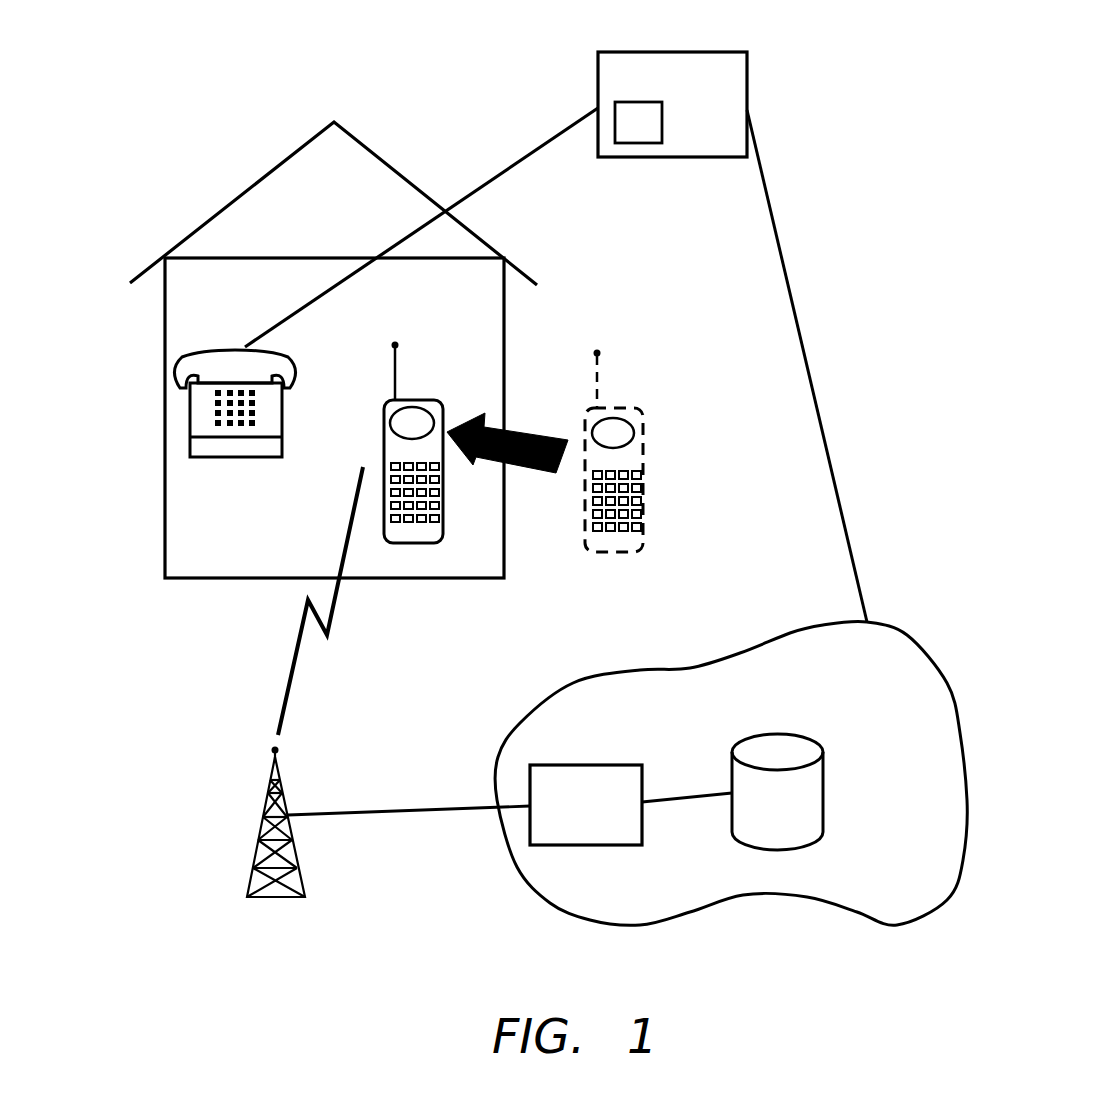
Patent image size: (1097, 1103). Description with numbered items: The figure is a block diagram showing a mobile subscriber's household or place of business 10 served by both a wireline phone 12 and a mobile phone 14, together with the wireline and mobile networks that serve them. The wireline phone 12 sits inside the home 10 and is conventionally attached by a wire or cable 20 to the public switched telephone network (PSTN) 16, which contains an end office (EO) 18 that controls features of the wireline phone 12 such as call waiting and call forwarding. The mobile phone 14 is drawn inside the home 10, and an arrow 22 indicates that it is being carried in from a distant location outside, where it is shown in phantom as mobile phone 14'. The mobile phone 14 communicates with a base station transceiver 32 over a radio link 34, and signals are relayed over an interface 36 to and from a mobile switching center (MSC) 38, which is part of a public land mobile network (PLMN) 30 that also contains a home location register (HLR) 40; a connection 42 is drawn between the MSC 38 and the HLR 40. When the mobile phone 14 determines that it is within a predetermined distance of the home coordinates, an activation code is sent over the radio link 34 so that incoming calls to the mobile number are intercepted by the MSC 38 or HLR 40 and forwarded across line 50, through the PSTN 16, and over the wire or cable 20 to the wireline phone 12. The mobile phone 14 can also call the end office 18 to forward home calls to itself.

The household or place of business 10 is at (165, 532).
The wireline phone 12 is at (190, 418).
The mobile phone 14 is at (425, 483).
The mobile phone at distant location 14' is at (657, 451).
The public switched telephone network (PSTN) 16 is at (688, 52).
The end office (EO) 18 is at (633, 143).
The wire or cable 20 is at (515, 165).
The arrow 22 is at (523, 430).
The public land mobile network (PLMN) 30 is at (787, 900).
The base station transceiver 32 is at (250, 872).
The radio link 34 is at (287, 688).
The interface 36 is at (353, 817).
The mobile switching center (MSC) 38 is at (570, 845).
The home location register (HLR) 40 is at (773, 850).
The MSC to HLR connection 42 is at (678, 802).
The line 50 is at (795, 307).